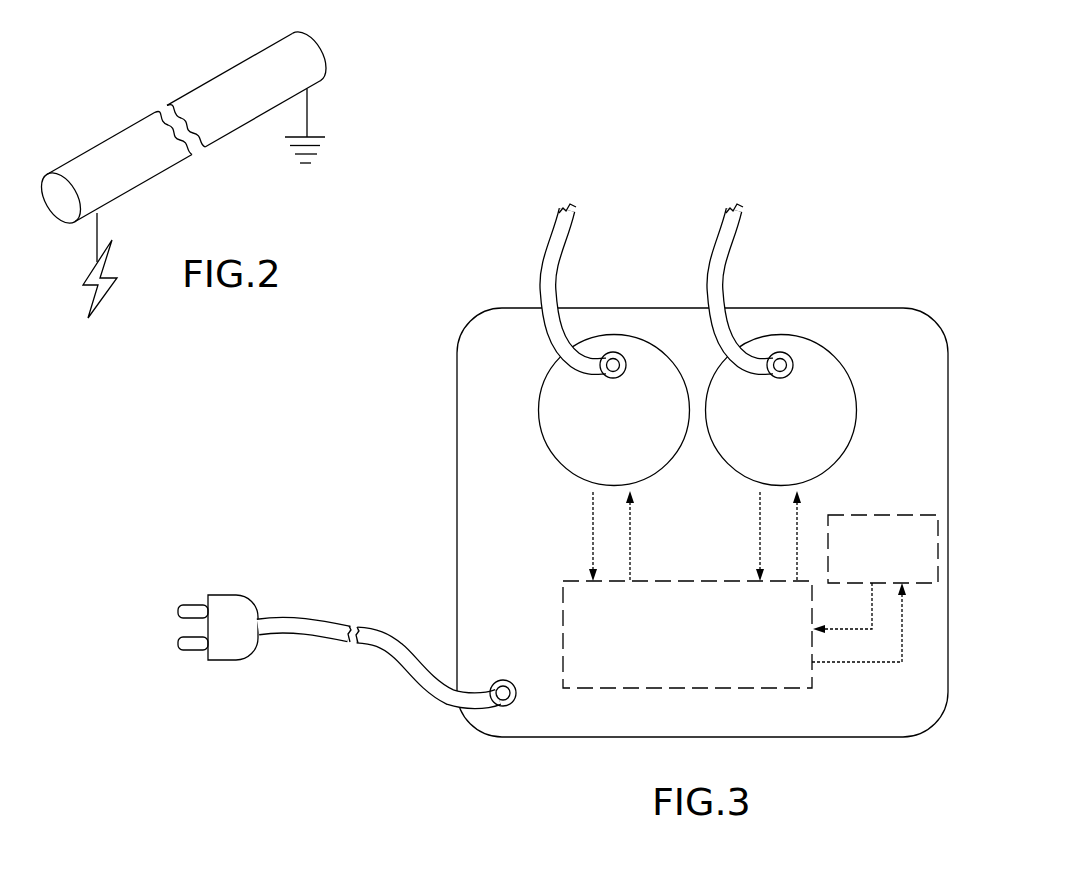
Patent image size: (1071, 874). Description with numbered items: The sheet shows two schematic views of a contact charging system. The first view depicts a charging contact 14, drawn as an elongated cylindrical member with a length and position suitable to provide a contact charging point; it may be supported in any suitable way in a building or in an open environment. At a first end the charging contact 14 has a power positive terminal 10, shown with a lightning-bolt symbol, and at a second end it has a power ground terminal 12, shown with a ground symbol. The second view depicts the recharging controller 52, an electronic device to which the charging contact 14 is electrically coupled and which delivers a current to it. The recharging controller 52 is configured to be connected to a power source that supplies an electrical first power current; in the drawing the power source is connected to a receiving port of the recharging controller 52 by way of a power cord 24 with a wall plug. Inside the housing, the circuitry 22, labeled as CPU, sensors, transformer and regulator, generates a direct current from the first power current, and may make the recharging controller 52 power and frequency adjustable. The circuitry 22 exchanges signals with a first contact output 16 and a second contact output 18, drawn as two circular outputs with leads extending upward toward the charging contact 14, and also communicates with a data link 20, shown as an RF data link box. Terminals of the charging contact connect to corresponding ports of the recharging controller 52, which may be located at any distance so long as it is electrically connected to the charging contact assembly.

In FIG. 2, the power positive terminal 10 is at (97, 246).
In FIG. 2, the power ground terminal 12 is at (308, 110).
In FIG. 2, the charging contact 14 is at (223, 95).
In FIG. 3, the first contact output 16 is at (563, 417).
In FIG. 3, the second contact output 18 is at (832, 413).
In FIG. 3, the data link 20 is at (872, 514).
In FIG. 3, the circuitry 22 is at (562, 625).
In FIG. 3, the power cord 24 is at (388, 641).
In FIG. 3, the recharging controller 52 is at (831, 262).